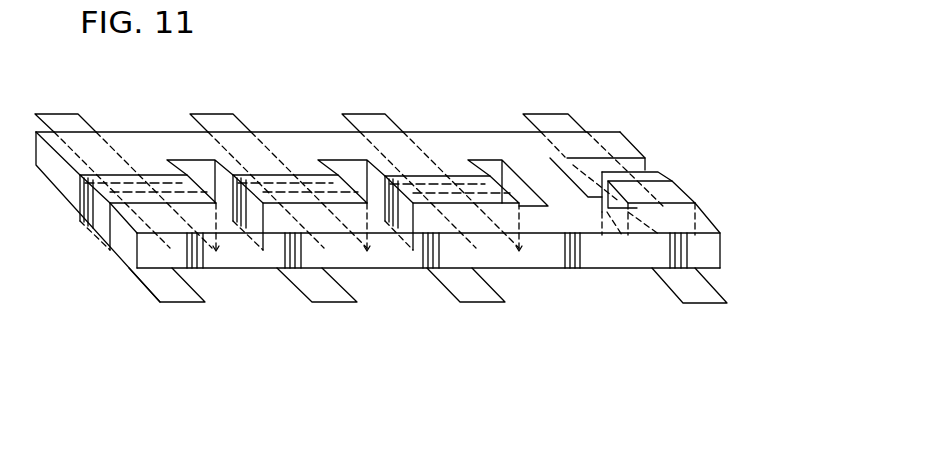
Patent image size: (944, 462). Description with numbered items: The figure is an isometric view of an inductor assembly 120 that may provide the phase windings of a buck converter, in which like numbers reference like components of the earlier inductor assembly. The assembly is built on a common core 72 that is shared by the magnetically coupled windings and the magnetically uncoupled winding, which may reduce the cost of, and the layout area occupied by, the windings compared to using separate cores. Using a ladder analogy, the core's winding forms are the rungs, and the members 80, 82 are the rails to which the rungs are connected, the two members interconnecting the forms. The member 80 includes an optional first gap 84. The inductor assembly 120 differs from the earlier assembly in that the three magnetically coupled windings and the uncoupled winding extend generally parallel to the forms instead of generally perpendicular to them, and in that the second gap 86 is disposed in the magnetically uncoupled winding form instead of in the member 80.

The common core 72 is at (730, 226).
The member 80 is at (160, 132).
The member 82 is at (598, 265).
The first gap 84 is at (476, 118).
The second gap 86 is at (658, 150).
The inductor assembly 120 is at (190, 329).